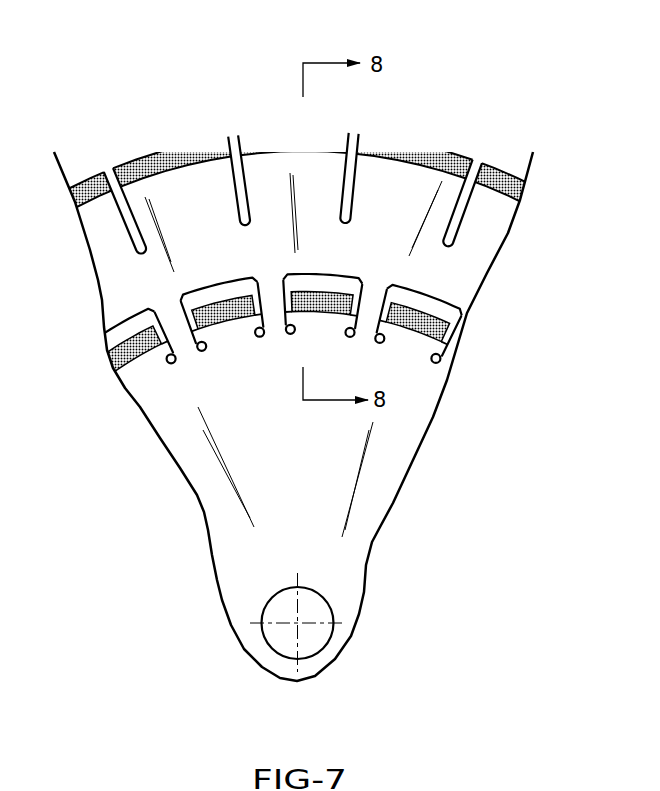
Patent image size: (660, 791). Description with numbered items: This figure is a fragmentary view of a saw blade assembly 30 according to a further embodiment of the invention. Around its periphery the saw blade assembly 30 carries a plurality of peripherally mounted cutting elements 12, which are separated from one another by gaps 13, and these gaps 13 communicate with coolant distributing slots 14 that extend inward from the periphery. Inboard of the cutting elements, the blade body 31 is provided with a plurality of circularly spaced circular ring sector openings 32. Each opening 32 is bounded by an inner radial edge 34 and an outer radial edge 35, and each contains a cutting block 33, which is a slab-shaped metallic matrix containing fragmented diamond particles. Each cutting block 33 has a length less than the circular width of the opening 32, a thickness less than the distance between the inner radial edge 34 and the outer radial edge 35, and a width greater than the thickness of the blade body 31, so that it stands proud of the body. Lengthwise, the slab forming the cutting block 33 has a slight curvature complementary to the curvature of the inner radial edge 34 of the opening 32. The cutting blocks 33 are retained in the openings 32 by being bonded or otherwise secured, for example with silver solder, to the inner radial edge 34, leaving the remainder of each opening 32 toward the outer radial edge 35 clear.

The cutting elements 12 is at (393, 137).
The gaps 13 is at (348, 161).
The coolant distributing slots 14 is at (244, 178).
The saw blade assembly 30 is at (432, 461).
The blade body 31 is at (380, 507).
The circular ring sector openings 32 is at (330, 305).
The cutting block 33 is at (342, 295).
The inner radial edge 34 is at (315, 308).
The outer radial edge 35 is at (302, 273).